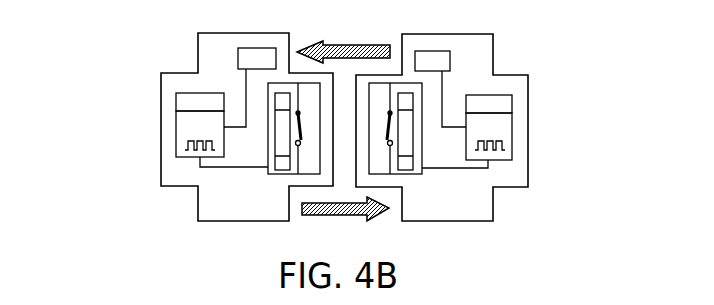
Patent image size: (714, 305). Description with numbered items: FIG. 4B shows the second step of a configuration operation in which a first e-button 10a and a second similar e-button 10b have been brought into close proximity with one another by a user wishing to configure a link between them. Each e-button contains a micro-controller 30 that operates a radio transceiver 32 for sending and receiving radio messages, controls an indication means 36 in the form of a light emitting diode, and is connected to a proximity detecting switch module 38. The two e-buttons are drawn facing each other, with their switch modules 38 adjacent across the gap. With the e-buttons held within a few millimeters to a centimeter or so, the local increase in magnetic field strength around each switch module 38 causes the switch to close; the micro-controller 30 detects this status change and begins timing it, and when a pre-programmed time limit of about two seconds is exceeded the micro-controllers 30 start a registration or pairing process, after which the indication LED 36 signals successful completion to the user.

The first e-button 10a is at (528, 172).
The second e-button 10b is at (161, 168).
The micro-controller 30 is at (176, 125).
The radio transceiver 32 is at (176, 103).
The indication means 36 is at (238, 61).
The switch module 38 is at (274, 175).